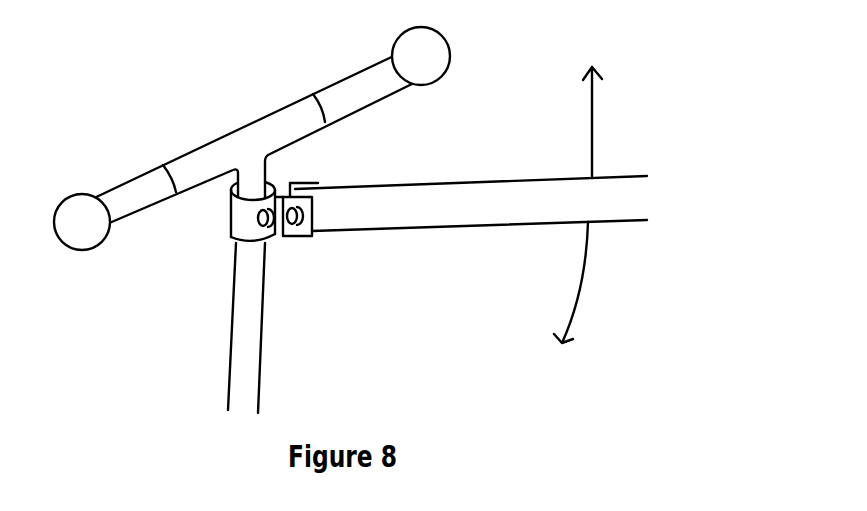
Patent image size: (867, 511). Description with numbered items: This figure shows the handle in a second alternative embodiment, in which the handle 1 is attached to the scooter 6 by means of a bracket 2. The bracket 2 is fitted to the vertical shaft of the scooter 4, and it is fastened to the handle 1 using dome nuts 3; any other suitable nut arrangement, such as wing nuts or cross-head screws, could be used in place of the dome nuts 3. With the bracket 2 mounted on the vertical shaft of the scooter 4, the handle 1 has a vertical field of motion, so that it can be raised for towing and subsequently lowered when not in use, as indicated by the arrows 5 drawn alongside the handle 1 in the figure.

The handle 1 is at (458, 182).
The bracket 2 is at (227, 237).
The dome nuts 3 is at (267, 237).
The vertical shaft of the scooter 4 is at (228, 387).
The arrows 5 is at (595, 108).
The scooter 6 is at (248, 125).